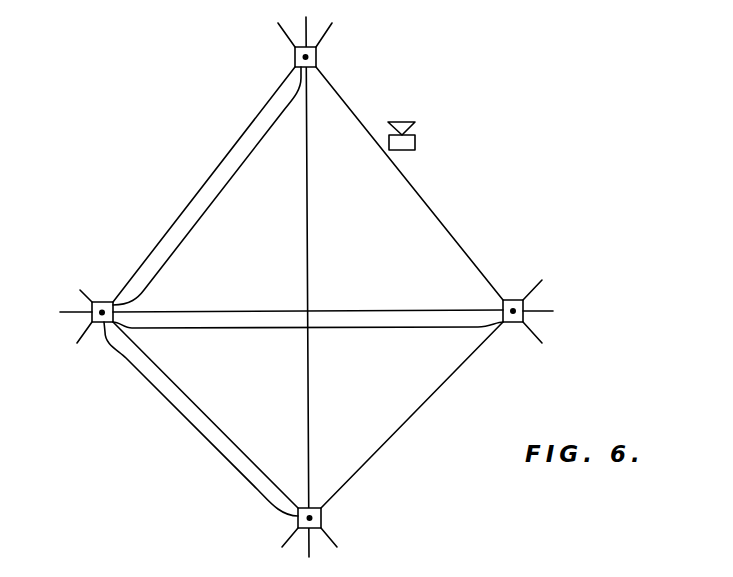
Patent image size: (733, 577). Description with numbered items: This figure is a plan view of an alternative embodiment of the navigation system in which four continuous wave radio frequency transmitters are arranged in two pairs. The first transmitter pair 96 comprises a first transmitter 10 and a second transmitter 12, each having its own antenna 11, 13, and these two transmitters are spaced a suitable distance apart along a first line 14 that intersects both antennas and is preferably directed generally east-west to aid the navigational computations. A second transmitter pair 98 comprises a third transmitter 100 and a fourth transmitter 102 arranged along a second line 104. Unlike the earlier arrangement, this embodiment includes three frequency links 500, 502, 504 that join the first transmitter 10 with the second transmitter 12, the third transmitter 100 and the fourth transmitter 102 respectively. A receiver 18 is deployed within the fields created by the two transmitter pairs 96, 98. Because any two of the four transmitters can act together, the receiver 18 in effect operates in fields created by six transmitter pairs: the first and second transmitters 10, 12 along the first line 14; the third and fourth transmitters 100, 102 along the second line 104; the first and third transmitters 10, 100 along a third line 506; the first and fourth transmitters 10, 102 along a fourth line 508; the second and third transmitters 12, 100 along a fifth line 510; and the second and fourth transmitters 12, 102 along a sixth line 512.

The first transmitter 10 is at (100, 317).
The antenna 11 is at (92, 303).
The second transmitter 12 is at (510, 322).
The antenna 13 is at (515, 308).
The line 14 is at (358, 310).
The receiver 18 is at (427, 132).
The first transmitter pair 96 is at (98, 296).
The second transmitter pair 98 is at (326, 61).
The third transmitter 100 is at (318, 52).
The fourth transmitter 102 is at (321, 523).
The second line 104 is at (308, 208).
The frequency link 500 is at (198, 329).
The frequency link 502 is at (198, 222).
The frequency link 504 is at (245, 481).
The third line 506 is at (230, 148).
The fourth line 508 is at (205, 415).
The fifth line 510 is at (427, 200).
The sixth line 512 is at (423, 403).